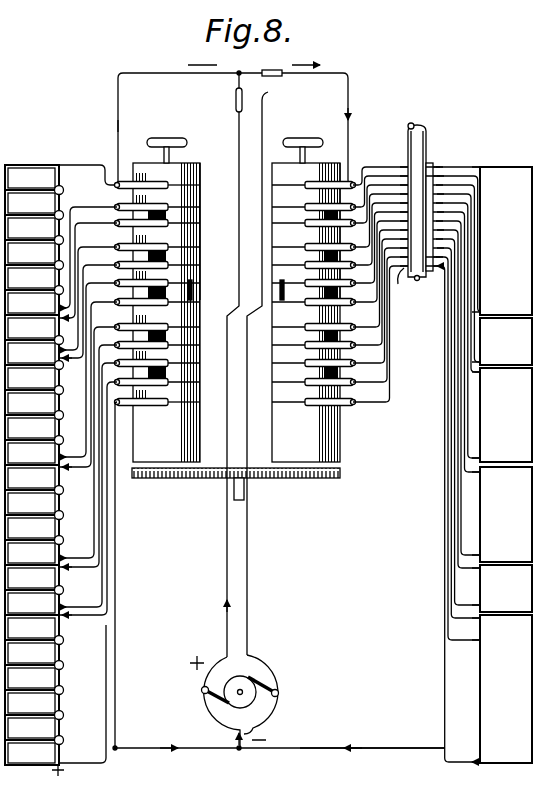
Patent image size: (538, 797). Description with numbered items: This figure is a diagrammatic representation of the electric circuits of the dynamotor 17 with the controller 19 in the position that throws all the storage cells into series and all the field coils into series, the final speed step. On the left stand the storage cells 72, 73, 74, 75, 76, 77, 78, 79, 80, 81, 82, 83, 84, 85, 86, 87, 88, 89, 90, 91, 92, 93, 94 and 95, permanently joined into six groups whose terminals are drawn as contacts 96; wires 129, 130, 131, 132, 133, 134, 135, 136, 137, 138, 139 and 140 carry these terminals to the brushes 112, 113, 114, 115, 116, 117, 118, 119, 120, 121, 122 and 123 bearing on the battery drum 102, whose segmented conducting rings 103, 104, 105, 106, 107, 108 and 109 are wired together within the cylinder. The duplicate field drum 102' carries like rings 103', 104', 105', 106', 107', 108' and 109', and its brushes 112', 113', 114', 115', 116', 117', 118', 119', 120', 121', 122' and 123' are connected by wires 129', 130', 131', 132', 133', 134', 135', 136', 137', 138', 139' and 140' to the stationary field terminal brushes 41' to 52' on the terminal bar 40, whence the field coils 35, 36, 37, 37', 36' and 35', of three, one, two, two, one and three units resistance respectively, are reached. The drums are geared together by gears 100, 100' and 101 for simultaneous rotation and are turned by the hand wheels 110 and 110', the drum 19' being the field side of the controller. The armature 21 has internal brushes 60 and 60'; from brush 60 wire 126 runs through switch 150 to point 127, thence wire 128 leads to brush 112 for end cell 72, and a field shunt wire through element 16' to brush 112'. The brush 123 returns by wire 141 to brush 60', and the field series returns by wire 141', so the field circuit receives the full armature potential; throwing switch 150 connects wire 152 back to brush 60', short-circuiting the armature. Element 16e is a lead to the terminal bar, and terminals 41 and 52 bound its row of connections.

The storage cell 72 is at (31, 178).
The storage cell 73 is at (31, 203).
The storage cell 74 is at (31, 228).
The storage cell 75 is at (31, 253).
The storage cell 76 is at (31, 278).
The storage cell 77 is at (31, 303).
The storage cell 78 is at (31, 328).
The storage cell 79 is at (31, 353).
The storage cell 80 is at (31, 378).
The storage cell 81 is at (31, 403).
The storage cell 82 is at (31, 428).
The storage cell 83 is at (31, 453).
The storage cell 84 is at (31, 478).
The storage cell 85 is at (31, 503).
The storage cell 86 is at (31, 528).
The storage cell 87 is at (31, 553).
The storage cell 88 is at (31, 578).
The storage cell 89 is at (31, 603).
The storage cell 90 is at (31, 628).
The storage cell 91 is at (31, 653).
The storage cell 92 is at (31, 678).
The storage cell 93 is at (31, 703).
The storage cell 94 is at (31, 728).
The storage cell 95 is at (31, 753).
The terminal contact 96 is at (74, 680).
The wire 129 is at (84, 165).
The wire 128 is at (147, 73).
The wire (connection point) 127 is at (239, 73).
The switch 16' is at (283, 59).
The switch 150 is at (272, 280).
The wire 126 is at (226, 583).
The wire 152 is at (248, 577).
The gear 100 is at (236, 485).
The gear 100' is at (288, 482).
The gear 101 is at (243, 484).
The drum 102 is at (166, 312).
The drum 102' is at (325, 312).
The hand wheel 110 is at (173, 136).
The hand wheel 110' is at (307, 135).
The controller 19 is at (201, 218).
The contact bank 19' is at (356, 216).
The conducting ring 103 is at (171, 186).
The conducting ring 104 is at (171, 217).
The conducting ring 105 is at (172, 256).
The conducting ring 106 is at (172, 293).
The conducting ring 107 is at (158, 336).
The conducting ring 108 is at (158, 373).
The conducting ring 109 is at (159, 402).
The conducting ring 103' is at (312, 186).
The conducting ring 104' is at (312, 217).
The conducting ring 105' is at (312, 256).
The conducting ring 106' is at (312, 293).
The conducting ring 107' is at (312, 336).
The conducting ring 108' is at (312, 373).
The conducting ring 109' is at (312, 403).
The brush 112 is at (111, 180).
The brush 113 is at (110, 202).
The brush 114 is at (111, 218).
The brush 115 is at (111, 242).
The brush 116 is at (111, 260).
The brush 117 is at (111, 278).
The brush 118 is at (111, 297).
The brush 119 is at (112, 322).
The brush 120 is at (112, 340).
The brush 121 is at (113, 358).
The brush 122 is at (113, 377).
The brush 123 is at (112, 397).
The brush 112' is at (355, 173).
The wire 129' is at (368, 179).
The brush 113' is at (337, 202).
The brush 114' is at (337, 218).
The brush 115' is at (337, 242).
The brush 116' is at (337, 260).
The brush 117' is at (337, 278).
The brush 118' is at (337, 297).
The brush 119' is at (337, 322).
The brush 120' is at (337, 340).
The brush 121' is at (337, 358).
The brush 122' is at (337, 377).
The brush 123' is at (337, 397).
The wire 130 is at (88, 257).
The wire 131 is at (88, 270).
The wire 132 is at (88, 296).
The wire 133 is at (88, 309).
The wire 134 is at (88, 367).
The wire 135 is at (88, 381).
The wire 136 is at (88, 439).
The wire 137 is at (88, 452).
The wire 138 is at (88, 482).
The wire 139 is at (89, 495).
The wire 140 is at (127, 576).
The wire 130' is at (380, 187).
The wire 131' is at (380, 204).
The wire 132' is at (380, 220).
The wire 133' is at (380, 234).
The wire 134' is at (380, 247).
The wire 135' is at (380, 261).
The wire 136' is at (380, 278).
The wire 137' is at (380, 292).
The wire 138' is at (380, 305).
The wire 139' is at (380, 319).
The wire 140' is at (380, 334).
The terminal bar 40 is at (416, 201).
The terminal 41 is at (424, 164).
The brush 41' is at (395, 164).
The terminal 52 is at (424, 259).
The brush 52' is at (427, 289).
The conductor 16e is at (413, 125).
The field coil 35 is at (506, 241).
The field coil 36 is at (506, 341).
The field coil 37 is at (506, 415).
The field coil 37' is at (506, 514).
The field coil 36' is at (506, 588).
The field coil 35' is at (506, 689).
The wire 141 is at (280, 740).
The wire 141' is at (372, 738).
The dynamotor 17 is at (257, 663).
The armature 21 is at (228, 678).
The brush 60 is at (207, 709).
The brush 60' is at (275, 677).